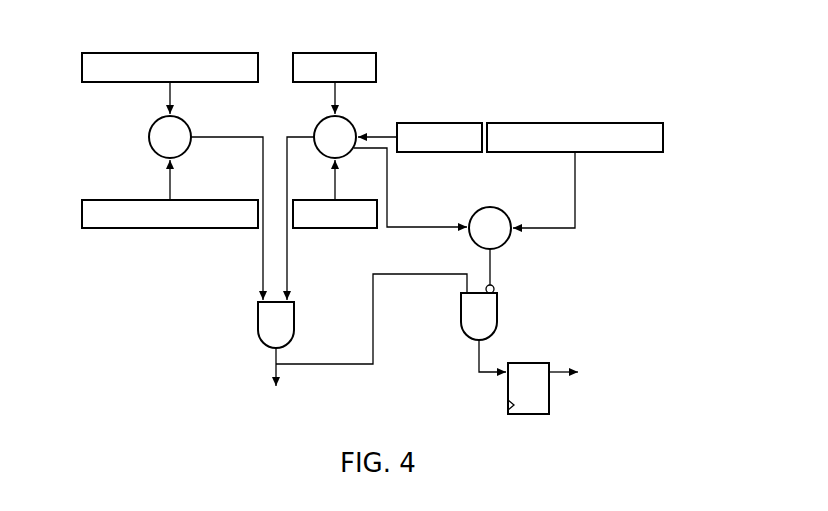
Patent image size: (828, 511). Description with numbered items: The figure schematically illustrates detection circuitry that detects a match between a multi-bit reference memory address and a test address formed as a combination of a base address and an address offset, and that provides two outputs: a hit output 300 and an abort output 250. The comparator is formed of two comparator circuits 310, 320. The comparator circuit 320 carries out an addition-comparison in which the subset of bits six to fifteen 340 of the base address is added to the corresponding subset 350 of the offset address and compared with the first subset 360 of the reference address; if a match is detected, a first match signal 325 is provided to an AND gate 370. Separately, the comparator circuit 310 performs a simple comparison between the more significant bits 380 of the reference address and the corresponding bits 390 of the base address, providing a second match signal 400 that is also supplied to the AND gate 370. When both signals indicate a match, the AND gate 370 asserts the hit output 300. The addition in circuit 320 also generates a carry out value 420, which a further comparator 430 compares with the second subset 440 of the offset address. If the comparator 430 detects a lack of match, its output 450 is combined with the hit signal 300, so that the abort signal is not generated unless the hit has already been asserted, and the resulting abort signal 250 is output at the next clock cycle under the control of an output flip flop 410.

The more significant bits of the reference address 380 is at (170, 53).
The corresponding bits of the base address 390 is at (170, 228).
The first subset of the reference address 360 is at (333, 53).
The corresponding subset of the base address 340 is at (335, 228).
The corresponding subset of the offset address 350 is at (437, 123).
The second subset of the offset address 440 is at (576, 123).
The comparator circuit 310 is at (184, 122).
The comparator circuit 320 is at (350, 120).
The further comparator 430 is at (504, 208).
The second match signal 400 is at (258, 265).
The first match signal 325 is at (292, 284).
The carry out value 420 is at (414, 227).
The output of the comparator 430 450 is at (492, 264).
The AND gate 370 is at (295, 324).
The hit output 300 is at (272, 366).
The output flip flop 410 is at (527, 414).
The abort output 250 is at (558, 375).